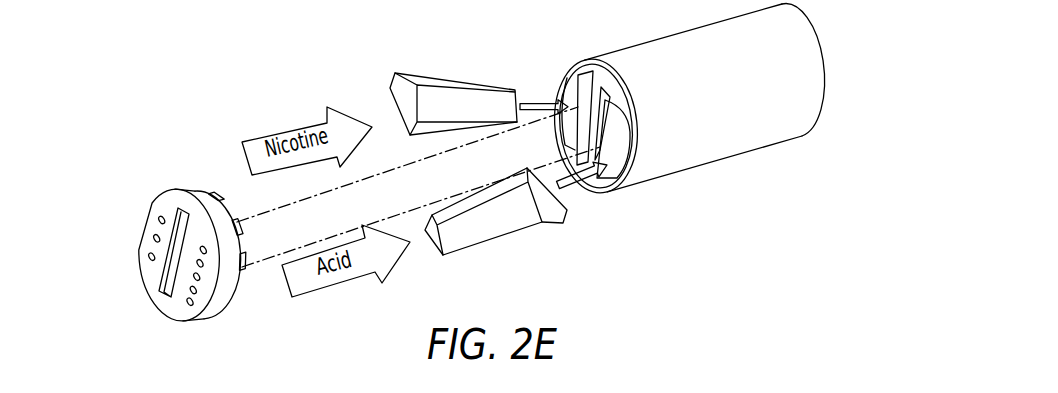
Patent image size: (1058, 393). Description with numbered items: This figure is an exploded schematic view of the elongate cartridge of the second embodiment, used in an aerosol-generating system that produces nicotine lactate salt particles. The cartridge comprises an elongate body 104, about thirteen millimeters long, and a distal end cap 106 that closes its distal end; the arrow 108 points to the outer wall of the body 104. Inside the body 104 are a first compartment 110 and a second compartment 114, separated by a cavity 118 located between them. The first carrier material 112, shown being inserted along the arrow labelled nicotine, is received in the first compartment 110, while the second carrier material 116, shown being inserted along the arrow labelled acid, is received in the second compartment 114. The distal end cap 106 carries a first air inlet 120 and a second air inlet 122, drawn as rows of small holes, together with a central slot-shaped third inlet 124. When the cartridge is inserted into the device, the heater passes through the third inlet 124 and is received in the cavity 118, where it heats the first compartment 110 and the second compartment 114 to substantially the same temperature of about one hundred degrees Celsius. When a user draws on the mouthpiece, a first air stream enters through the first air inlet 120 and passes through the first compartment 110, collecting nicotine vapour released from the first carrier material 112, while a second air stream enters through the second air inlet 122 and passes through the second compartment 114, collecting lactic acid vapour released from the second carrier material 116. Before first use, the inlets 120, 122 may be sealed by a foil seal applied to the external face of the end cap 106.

The elongate body 104 is at (712, 100).
The distal end cap 106 is at (187, 259).
The housing 108 is at (813, 35).
The first compartment 110 is at (573, 90).
The first carrier material 112 is at (458, 95).
The second compartment 114 is at (618, 148).
The second carrier material 116 is at (490, 234).
The cavity 118 is at (600, 90).
The first air inlet 120 is at (151, 257).
The second air inlet 122 is at (187, 306).
The third inlet 124 is at (177, 228).